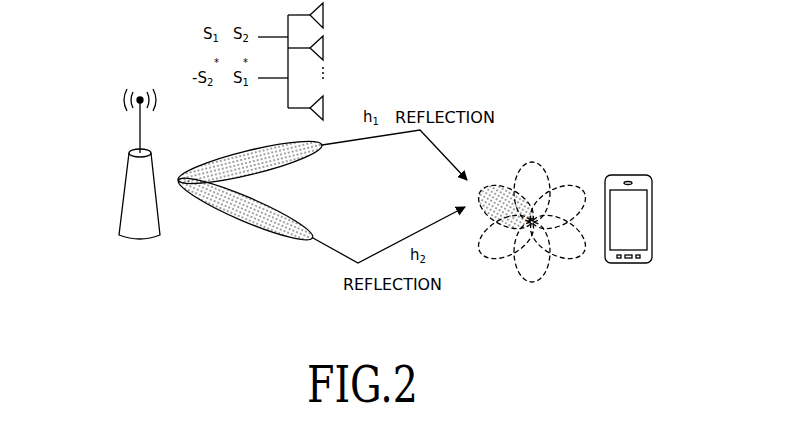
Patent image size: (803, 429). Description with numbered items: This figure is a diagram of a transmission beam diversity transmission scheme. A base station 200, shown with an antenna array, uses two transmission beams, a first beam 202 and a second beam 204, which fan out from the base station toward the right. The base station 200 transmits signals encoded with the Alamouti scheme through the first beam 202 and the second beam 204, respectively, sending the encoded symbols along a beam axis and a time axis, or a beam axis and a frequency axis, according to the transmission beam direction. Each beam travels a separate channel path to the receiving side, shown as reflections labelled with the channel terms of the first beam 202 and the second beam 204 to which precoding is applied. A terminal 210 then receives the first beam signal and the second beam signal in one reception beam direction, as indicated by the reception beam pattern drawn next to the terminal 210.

The base station 200 is at (124, 193).
The first beam 202 is at (232, 152).
The second beam 204 is at (263, 230).
The terminal 210 is at (654, 220).